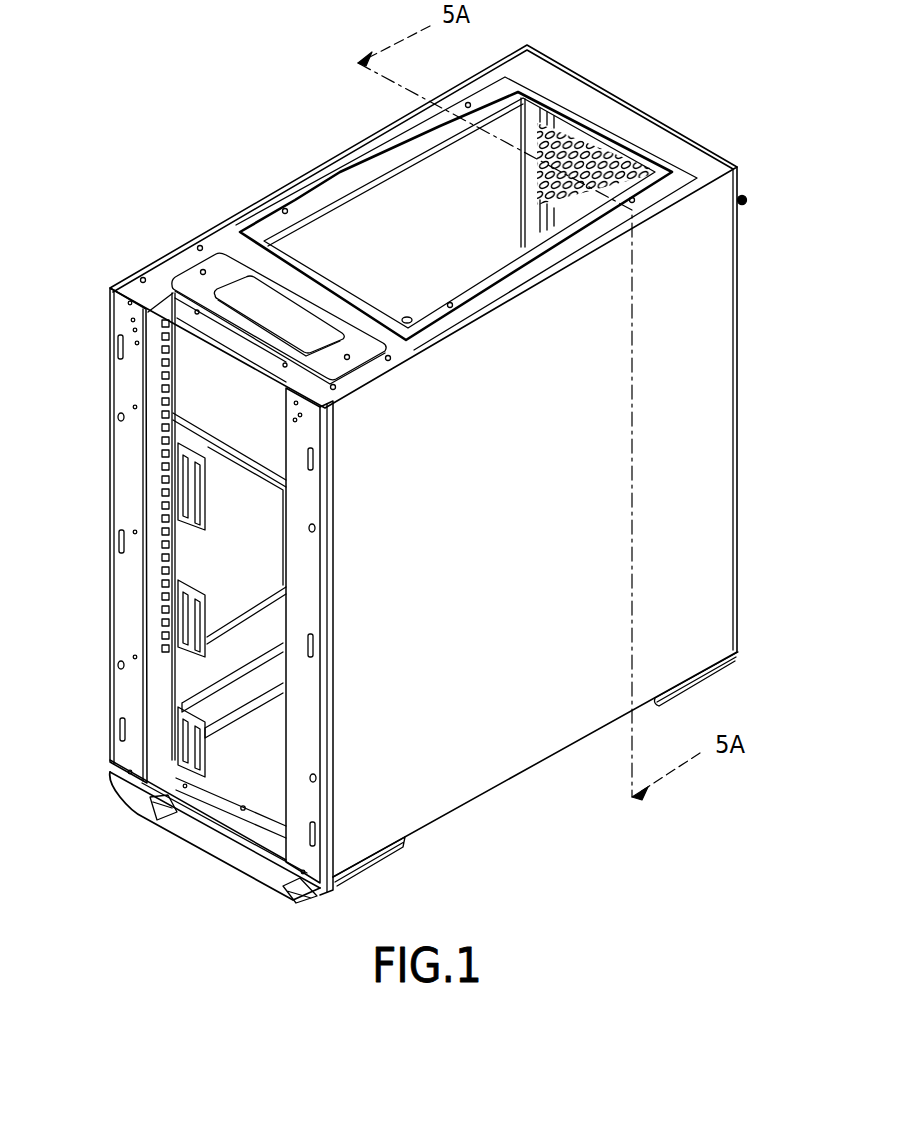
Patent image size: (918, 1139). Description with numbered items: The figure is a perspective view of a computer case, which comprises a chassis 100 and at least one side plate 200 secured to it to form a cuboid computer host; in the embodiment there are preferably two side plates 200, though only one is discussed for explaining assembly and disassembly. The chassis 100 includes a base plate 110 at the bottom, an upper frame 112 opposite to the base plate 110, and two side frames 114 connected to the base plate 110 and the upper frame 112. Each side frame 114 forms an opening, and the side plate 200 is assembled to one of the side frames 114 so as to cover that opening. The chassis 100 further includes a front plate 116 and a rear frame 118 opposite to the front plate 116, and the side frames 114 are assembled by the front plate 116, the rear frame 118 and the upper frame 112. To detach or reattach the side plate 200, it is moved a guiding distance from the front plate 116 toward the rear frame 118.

The chassis 100 is at (302, 190).
The base plate 110 is at (238, 768).
The upper frame 112 is at (177, 265).
The side frame 114 is at (367, 172).
The front plate 116 is at (127, 455).
The rear frame 118 is at (533, 122).
The side plate 200 is at (698, 369).